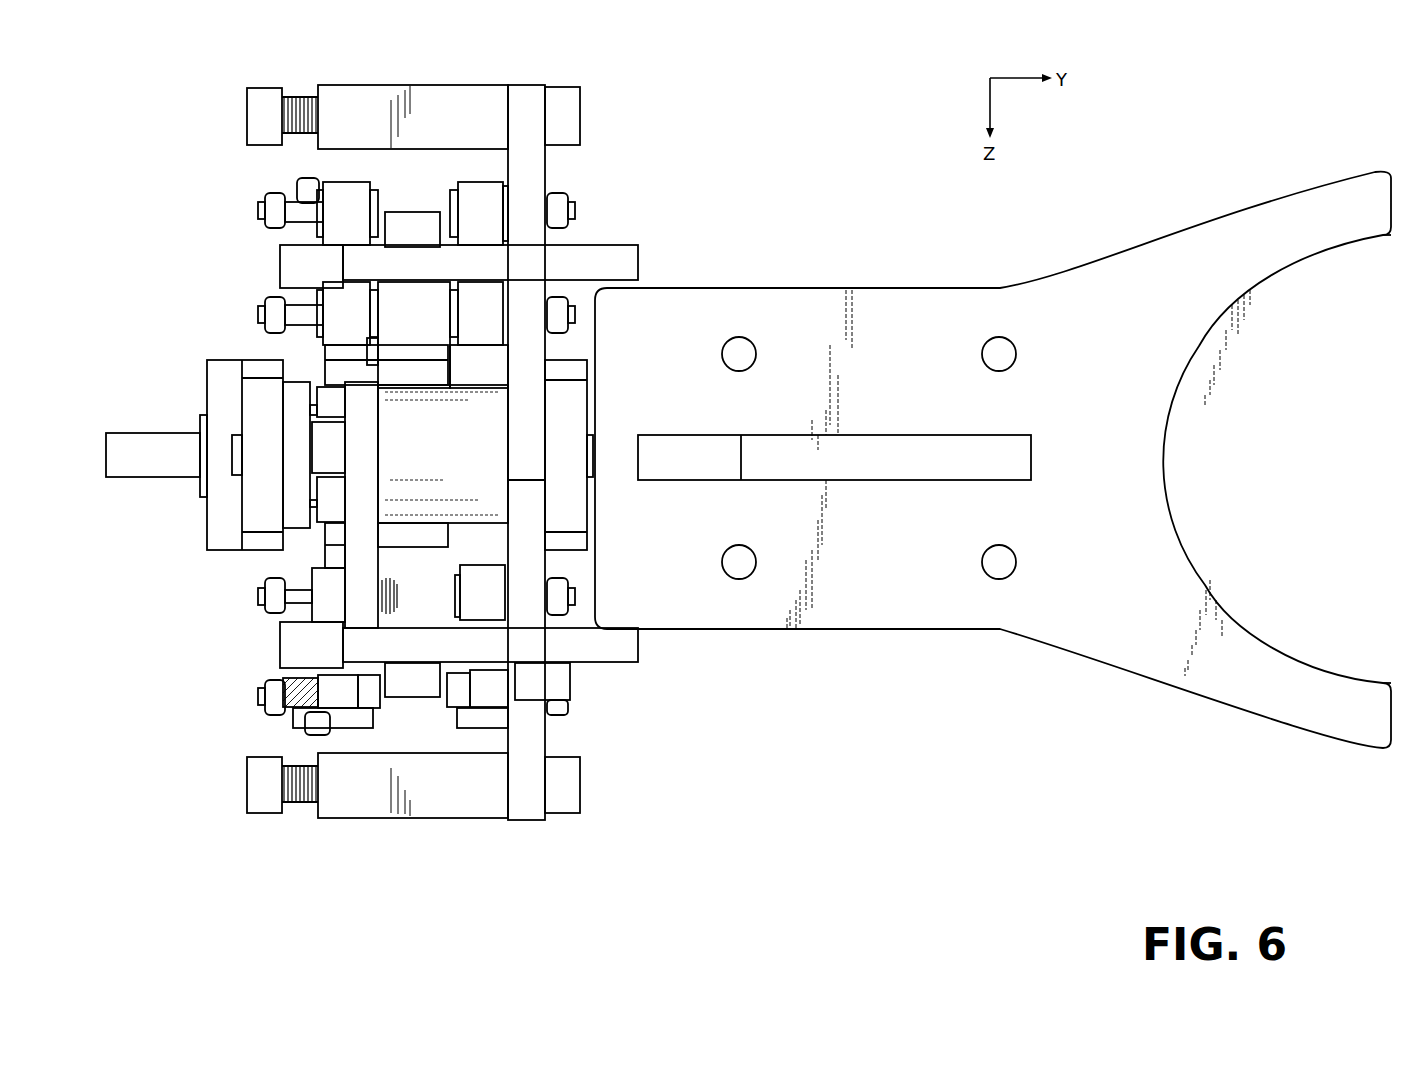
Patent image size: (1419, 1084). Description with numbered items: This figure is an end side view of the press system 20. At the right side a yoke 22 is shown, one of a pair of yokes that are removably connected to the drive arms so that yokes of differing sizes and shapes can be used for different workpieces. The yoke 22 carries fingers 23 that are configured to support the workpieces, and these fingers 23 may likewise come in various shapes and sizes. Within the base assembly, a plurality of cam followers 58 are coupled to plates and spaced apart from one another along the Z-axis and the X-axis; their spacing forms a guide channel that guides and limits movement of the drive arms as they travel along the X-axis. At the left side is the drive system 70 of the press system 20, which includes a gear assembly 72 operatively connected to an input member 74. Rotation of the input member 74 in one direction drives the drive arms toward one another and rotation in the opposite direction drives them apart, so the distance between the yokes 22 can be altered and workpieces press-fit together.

The press system 20 is at (722, 116).
The yoke 22 is at (1138, 458).
The finger 23 is at (1377, 191).
The cam follower 58 is at (480, 193).
The drive system 70 is at (210, 597).
The gear assembly 72 is at (236, 329).
The input member 74 is at (158, 450).